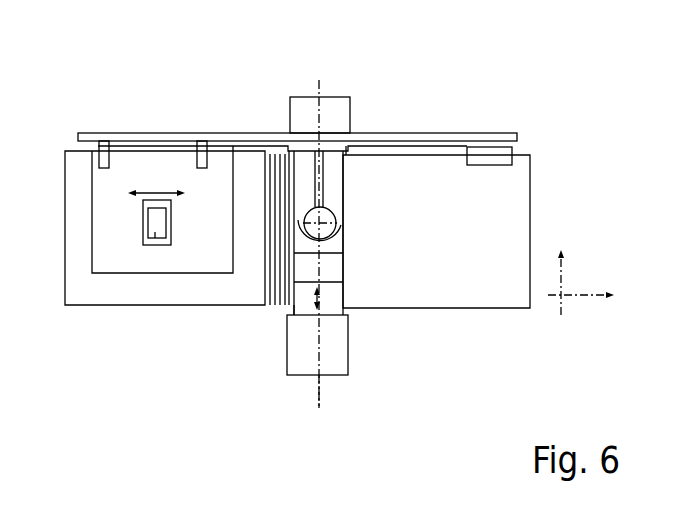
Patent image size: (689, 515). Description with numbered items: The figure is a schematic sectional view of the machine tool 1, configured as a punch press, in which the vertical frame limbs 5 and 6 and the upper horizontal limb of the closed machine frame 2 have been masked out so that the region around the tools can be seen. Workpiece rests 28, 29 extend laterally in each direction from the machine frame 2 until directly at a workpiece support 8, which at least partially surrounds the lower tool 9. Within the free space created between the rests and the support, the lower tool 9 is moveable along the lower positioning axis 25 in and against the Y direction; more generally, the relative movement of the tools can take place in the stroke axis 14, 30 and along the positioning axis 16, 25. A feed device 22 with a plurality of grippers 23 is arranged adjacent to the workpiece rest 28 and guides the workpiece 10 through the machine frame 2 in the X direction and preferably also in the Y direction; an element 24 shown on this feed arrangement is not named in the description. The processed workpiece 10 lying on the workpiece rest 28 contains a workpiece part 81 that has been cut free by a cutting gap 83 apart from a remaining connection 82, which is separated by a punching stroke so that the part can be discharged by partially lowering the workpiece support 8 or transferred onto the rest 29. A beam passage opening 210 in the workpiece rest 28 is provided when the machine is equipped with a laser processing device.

The machine tool 1 is at (326, 219).
The machine frame 2 is at (328, 87).
The vertical frame limb 5 is at (300, 113).
The vertical frame limb 6 is at (337, 340).
The workpiece support 8 is at (333, 265).
The lower tool 9 is at (341, 218).
The workpiece 10 is at (117, 258).
The stroke axis 14 is at (372, 180).
The stroke axis 30 is at (335, 210).
The positioning axis 16 is at (371, 392).
The lower positioning axis 25 is at (318, 397).
The feed device 22 is at (102, 122).
The grippers 23 is at (200, 141).
The bracket 24 is at (500, 137).
The workpiece rest 28 is at (78, 253).
The workpiece rest 29 is at (483, 300).
The workpiece part 81 is at (155, 245).
The remaining connection 82 is at (147, 225).
The cutting gap 83 is at (167, 250).
The beam passage opening 210 is at (272, 313).